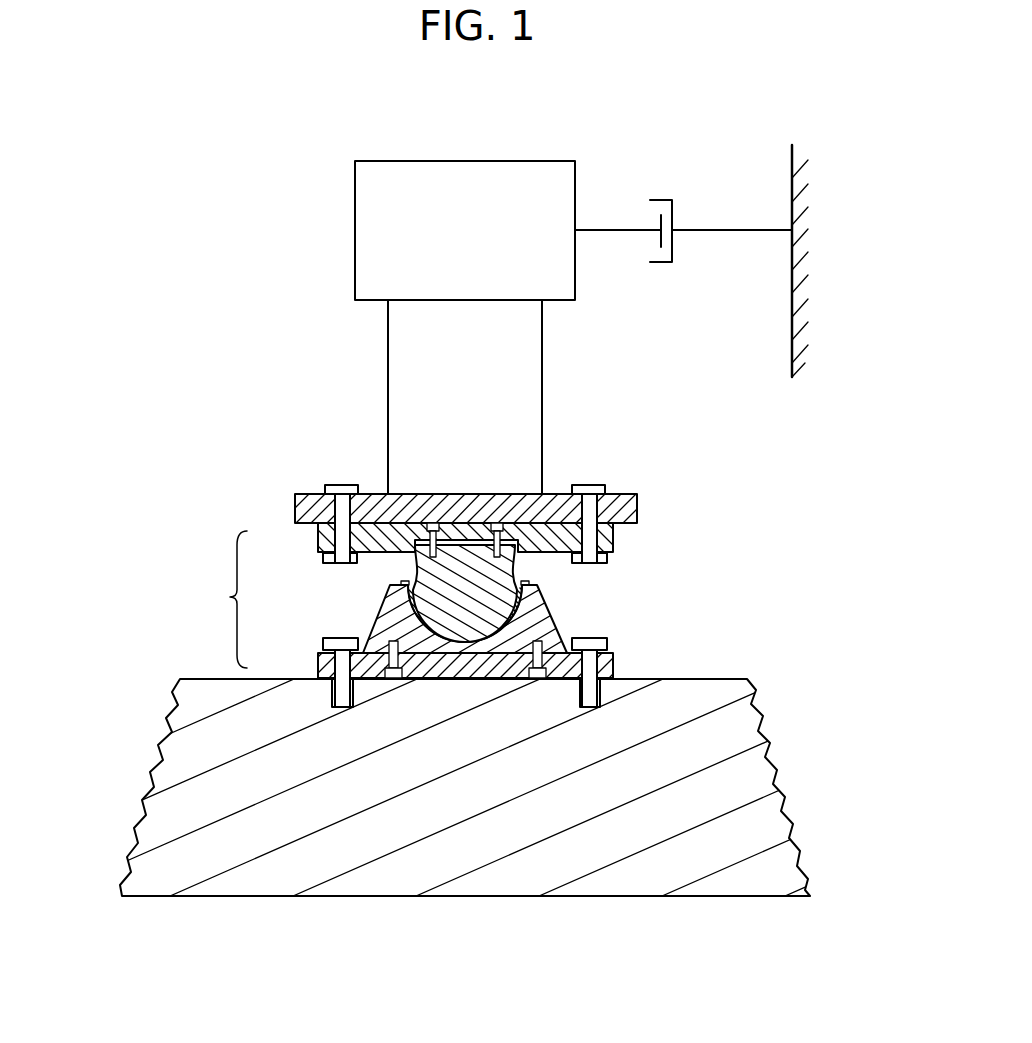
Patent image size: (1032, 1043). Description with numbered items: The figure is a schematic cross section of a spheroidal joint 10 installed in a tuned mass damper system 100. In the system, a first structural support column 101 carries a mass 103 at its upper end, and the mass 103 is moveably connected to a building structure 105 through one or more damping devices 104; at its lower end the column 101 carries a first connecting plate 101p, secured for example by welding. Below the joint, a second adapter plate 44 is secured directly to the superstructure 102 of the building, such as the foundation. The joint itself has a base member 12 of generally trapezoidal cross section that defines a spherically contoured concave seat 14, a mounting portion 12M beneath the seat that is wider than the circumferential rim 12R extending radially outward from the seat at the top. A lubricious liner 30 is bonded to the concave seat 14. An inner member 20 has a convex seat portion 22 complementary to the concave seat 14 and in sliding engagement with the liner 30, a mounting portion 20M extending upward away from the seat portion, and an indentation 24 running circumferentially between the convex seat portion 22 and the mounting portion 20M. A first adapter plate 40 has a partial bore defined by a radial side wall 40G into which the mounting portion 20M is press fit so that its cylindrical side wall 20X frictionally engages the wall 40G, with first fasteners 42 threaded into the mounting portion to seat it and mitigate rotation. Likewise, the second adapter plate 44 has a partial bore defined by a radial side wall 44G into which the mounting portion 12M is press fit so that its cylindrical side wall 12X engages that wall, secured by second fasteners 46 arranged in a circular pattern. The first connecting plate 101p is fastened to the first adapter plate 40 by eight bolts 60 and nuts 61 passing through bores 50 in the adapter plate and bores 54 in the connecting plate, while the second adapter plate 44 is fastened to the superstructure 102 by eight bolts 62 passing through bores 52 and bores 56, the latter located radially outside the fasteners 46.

The spheroidal joint 10 is at (223, 599).
The base member 12 is at (544, 612).
The mounting portion of base member 12M is at (503, 663).
The circumferential rim 12R is at (526, 587).
The cylindrical side wall 12X is at (558, 665).
The concave seat 14 is at (549, 632).
The inner member 20 is at (456, 628).
The mounting portion of inner member 20M is at (470, 540).
The cylindrical side wall 20X is at (522, 545).
The convex seat portion 22 is at (482, 648).
The indentation 24 is at (530, 571).
The lubricious liner 30 is at (402, 598).
The first adapter plate 40 is at (296, 506).
The radial side wall 40G is at (410, 565).
The first fasteners 42 is at (433, 523).
The second adapter plate 44 is at (614, 660).
The radial side wall 44G is at (372, 682).
The second fasteners 46 is at (397, 690).
The bores of first adapter plate 50 is at (613, 540).
The bores of second adapter plate 52 is at (625, 677).
The bores of first connecting plate 54 is at (597, 488).
The bores of second connecting plate 56 is at (601, 700).
The bolts 60 is at (345, 486).
The nuts 61 is at (324, 557).
The bolts 62 is at (330, 640).
The tuned mass damper system 100 is at (228, 304).
The first structural support column 101 is at (544, 380).
The first connecting plate 101p is at (548, 492).
The superstructure 102 is at (750, 795).
The mass 103 is at (538, 168).
The damping devices 104 is at (668, 185).
The building structure 105 is at (795, 150).